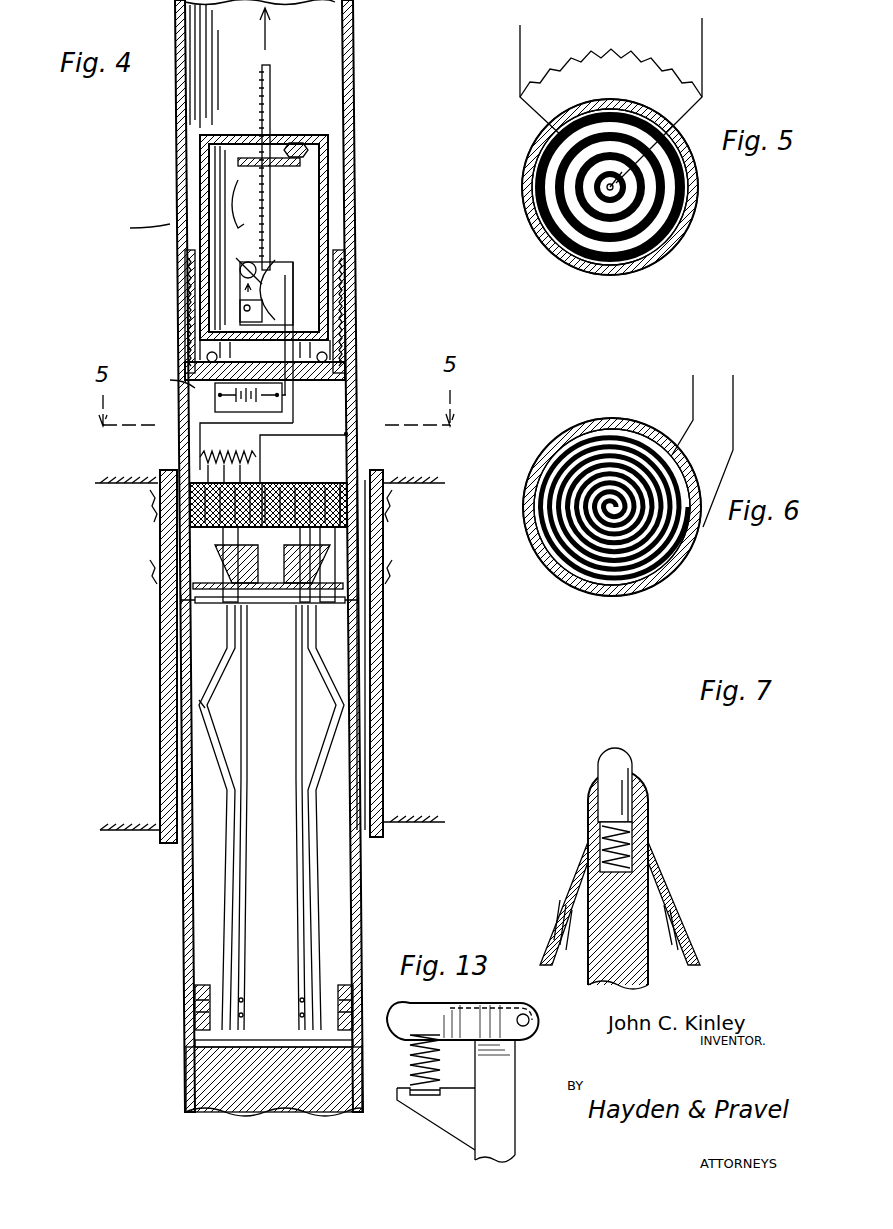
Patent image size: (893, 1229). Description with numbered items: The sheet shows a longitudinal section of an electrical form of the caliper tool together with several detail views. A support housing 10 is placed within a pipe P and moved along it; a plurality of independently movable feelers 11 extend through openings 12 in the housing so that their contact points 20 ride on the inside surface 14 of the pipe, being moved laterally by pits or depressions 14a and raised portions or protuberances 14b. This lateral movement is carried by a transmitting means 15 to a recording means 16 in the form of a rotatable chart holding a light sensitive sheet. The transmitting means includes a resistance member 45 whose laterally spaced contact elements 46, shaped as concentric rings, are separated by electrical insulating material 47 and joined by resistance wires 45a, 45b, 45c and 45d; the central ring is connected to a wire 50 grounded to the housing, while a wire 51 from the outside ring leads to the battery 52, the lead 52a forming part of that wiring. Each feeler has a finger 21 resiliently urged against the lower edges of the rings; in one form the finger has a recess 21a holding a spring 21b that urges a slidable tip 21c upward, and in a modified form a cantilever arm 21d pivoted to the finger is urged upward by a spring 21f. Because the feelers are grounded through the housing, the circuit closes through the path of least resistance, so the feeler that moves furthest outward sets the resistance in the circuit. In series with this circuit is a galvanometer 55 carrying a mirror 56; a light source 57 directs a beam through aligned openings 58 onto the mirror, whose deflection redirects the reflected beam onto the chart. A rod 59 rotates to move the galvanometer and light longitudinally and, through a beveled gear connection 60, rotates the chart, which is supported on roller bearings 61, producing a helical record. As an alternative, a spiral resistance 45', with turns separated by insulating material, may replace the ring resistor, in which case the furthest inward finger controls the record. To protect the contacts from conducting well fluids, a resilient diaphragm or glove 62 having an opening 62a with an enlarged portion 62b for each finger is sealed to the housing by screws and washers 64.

In FIG. 4, the support housing 10 is at (188, 904).
In FIG. 5, the support housing 10 is at (532, 152).
In FIG. 4, the feelers 11 is at (245, 817).
In FIG. 4, the openings 12 is at (229, 708).
In FIG. 4, the inside surface 14 is at (384, 748).
In FIG. 4, the pits or depressions 14a is at (366, 709).
In FIG. 4, the raised portions or protuberances 14b is at (177, 694).
In FIG. 4, the transmitting means 15 is at (290, 476).
In FIG. 4, the recording means 16 is at (190, 218).
In FIG. 4, the contact points 20 is at (198, 704).
In FIG. 4, the fingers 21 is at (227, 542).
In FIG. 7, the fingers 21 is at (646, 818).
In FIG. 13, the fingers 21 is at (530, 1020).
In FIG. 7, the recess 21a is at (628, 844).
In FIG. 7, the spring 21b is at (602, 832).
In FIG. 7, the tip 21c is at (610, 749).
In FIG. 13, the cantilever arm 21d is at (466, 1008).
In FIG. 13, the spring 21f is at (410, 1082).
In FIG. 4, the resistance member 45 is at (272, 487).
In FIG. 5, the resistance wire 45a is at (563, 138).
In FIG. 5, the resistance wire 45b is at (612, 152).
In FIG. 5, the resistance wire 45c is at (620, 165).
In FIG. 5, the resistance wire 45d is at (616, 183).
In FIG. 6, the spiral resistance 45' is at (615, 480).
In FIG. 4, the contact elements 46 is at (349, 478).
In FIG. 5, the contact elements 46 is at (578, 262).
In FIG. 4, the electrical insulating material 47 is at (265, 479).
In FIG. 5, the electrical insulating material 47 is at (544, 231).
In FIG. 6, the electrical insulating material 47 is at (663, 552).
In FIG. 4, the wire 50 is at (306, 434).
In FIG. 5, the wire 50 is at (702, 22).
In FIG. 6, the wire 50 is at (733, 428).
In FIG. 4, the wire 51 is at (200, 424).
In FIG. 5, the wire 51 is at (520, 52).
In FIG. 6, the wire 51 is at (693, 396).
In FIG. 4, the battery 52 is at (225, 394).
In FIG. 4, the battery lead 52a is at (186, 381).
In FIG. 4, the galvanometer 55 is at (250, 262).
In FIG. 4, the mirror 56 is at (275, 260).
In FIG. 4, the light source 57 is at (262, 310).
In FIG. 4, the aligned openings 58 is at (270, 274).
In FIG. 4, the rod 59 is at (270, 73).
In FIG. 4, the beveled gear connection 60 is at (297, 160).
In FIG. 4, the roller bearings 61 is at (328, 358).
In FIG. 4, the diaphragm or glove 62 is at (264, 590).
In FIG. 7, the opening 62a is at (648, 906).
In FIG. 7, the enlarged portion 62b is at (648, 892).
In FIG. 4, the screws and washers 64 is at (194, 600).
In FIG. 4, the pipe P is at (386, 482).